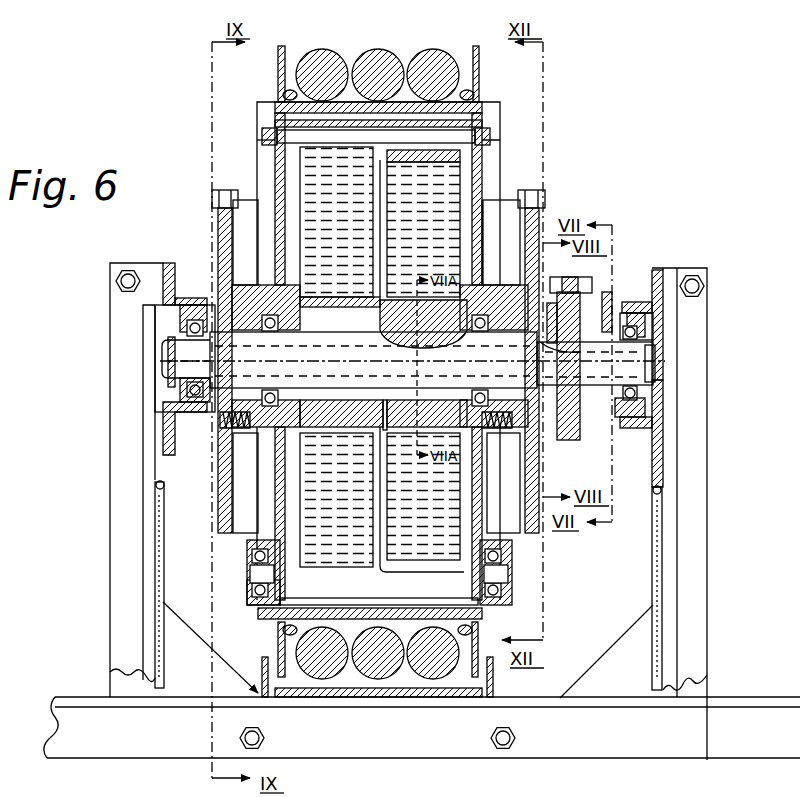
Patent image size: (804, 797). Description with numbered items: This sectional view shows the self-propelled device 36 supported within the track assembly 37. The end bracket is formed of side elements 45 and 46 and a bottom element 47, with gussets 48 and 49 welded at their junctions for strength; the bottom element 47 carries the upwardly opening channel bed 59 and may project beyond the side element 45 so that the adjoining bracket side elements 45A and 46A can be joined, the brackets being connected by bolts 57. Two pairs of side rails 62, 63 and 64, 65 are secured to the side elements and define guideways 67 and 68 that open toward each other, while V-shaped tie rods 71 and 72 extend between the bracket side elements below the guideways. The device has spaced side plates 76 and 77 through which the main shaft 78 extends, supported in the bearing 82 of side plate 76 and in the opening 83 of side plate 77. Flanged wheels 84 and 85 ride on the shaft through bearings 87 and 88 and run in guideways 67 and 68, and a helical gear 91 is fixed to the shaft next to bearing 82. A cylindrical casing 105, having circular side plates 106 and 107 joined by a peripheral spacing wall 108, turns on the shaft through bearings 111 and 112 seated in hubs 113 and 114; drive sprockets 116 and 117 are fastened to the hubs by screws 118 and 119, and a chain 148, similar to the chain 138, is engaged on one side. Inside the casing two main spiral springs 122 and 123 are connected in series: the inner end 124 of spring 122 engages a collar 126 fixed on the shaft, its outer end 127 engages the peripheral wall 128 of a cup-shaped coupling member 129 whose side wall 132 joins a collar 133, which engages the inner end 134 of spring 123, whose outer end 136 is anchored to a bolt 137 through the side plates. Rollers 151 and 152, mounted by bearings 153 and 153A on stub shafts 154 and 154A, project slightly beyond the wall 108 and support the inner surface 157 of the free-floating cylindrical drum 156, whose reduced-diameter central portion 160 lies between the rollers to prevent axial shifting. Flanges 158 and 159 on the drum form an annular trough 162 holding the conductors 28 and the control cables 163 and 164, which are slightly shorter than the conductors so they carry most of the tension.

The conductors 28 is at (382, 56).
The self-propelled device 36 is at (505, 122).
The track assembly 37 is at (720, 298).
The side element 45 is at (118, 503).
The side element 45A is at (122, 680).
The side element 46 is at (693, 520).
The lower end of right frame plate 46A is at (693, 688).
The bottom element 47 is at (408, 745).
The gusset 48 is at (173, 625).
The gusset 49 is at (620, 648).
The bolts 57 is at (113, 290).
The channel bed 59 is at (495, 685).
The side rail 62 is at (656, 272).
The side rail 63 is at (660, 458).
The side rail 64 is at (170, 270).
The side rail 65 is at (166, 442).
The guideway 67 is at (655, 312).
The guideway 68 is at (167, 315).
The tie rod 71 is at (660, 513).
The tie rod 72 is at (157, 545).
The side plate 76 is at (606, 292).
The side plate 77 is at (163, 401).
The main shaft 78 is at (178, 353).
The bearing 82 is at (613, 308).
The opening 83 is at (167, 380).
The wheel 84 is at (195, 296).
The wheel 85 is at (650, 415).
The bearing 87 is at (168, 320).
The bearing 88 is at (652, 400).
The helical gear 91 is at (575, 432).
The cylindrical casing 105 is at (485, 170).
The side plate 106 is at (485, 198).
The side plate 107 is at (275, 180).
The peripheral spacing wall 108 is at (483, 108).
The bearing 111 is at (487, 300).
The bearing 112 is at (262, 300).
The hub 113 is at (510, 450).
The hub 114 is at (238, 428).
The drive sprocket 116 is at (540, 214).
The drive sprocket 117 is at (222, 226).
The screws 118 is at (514, 410).
The screws 119 is at (262, 398).
The main spiral spring 122 is at (447, 560).
The main spiral spring 123 is at (345, 566).
The inner end 124 is at (436, 412).
The collar 126 is at (395, 338).
The outer end 127 is at (415, 163).
The peripheral wall 128 is at (489, 158).
The coupling member 129 is at (387, 568).
The side wall 132 is at (410, 400).
The collar 133 is at (359, 379).
The inner end 134 is at (345, 276).
The outer end 136 is at (313, 135).
The bolt 137 is at (263, 136).
The chain 138 is at (545, 200).
The chain 148 is at (222, 192).
The rollers 151 is at (500, 620).
The rollers 152 is at (248, 612).
The bearing 153 is at (512, 603).
The bearing 153A is at (245, 602).
The stub shaft 154 is at (510, 575).
The stub shaft 154A is at (250, 578).
The cylindrical drum 156 is at (278, 110).
The inner surface 157 is at (335, 128).
The flange 158 is at (479, 46).
The flange 159 is at (280, 45).
The central portion 160 is at (417, 150).
The annular trough 162 is at (287, 672).
The control cable 163 is at (470, 94).
The control cable 164 is at (289, 90).